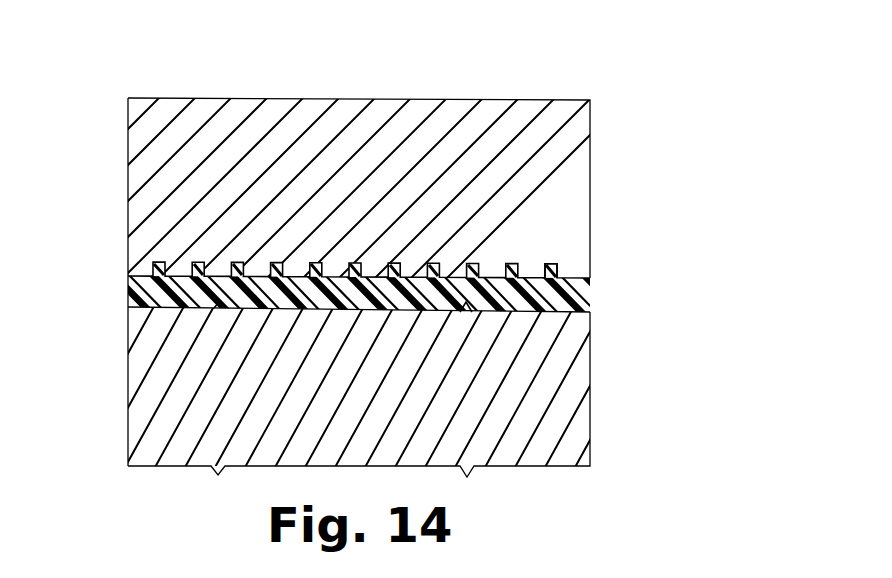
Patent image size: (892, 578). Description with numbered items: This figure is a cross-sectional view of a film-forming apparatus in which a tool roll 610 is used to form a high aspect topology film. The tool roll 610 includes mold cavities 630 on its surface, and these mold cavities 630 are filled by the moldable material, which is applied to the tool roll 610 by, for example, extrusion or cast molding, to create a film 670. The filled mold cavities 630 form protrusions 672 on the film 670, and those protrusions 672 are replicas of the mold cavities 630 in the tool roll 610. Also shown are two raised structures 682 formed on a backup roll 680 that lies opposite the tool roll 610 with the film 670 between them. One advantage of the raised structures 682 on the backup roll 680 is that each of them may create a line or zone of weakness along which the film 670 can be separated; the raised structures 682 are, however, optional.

The tool roll 610 is at (585, 148).
The mold cavities 630 is at (323, 262).
The protrusions 672 is at (560, 268).
The film 670 is at (577, 298).
The raised structures 682 is at (470, 312).
The backup roll 680 is at (580, 403).